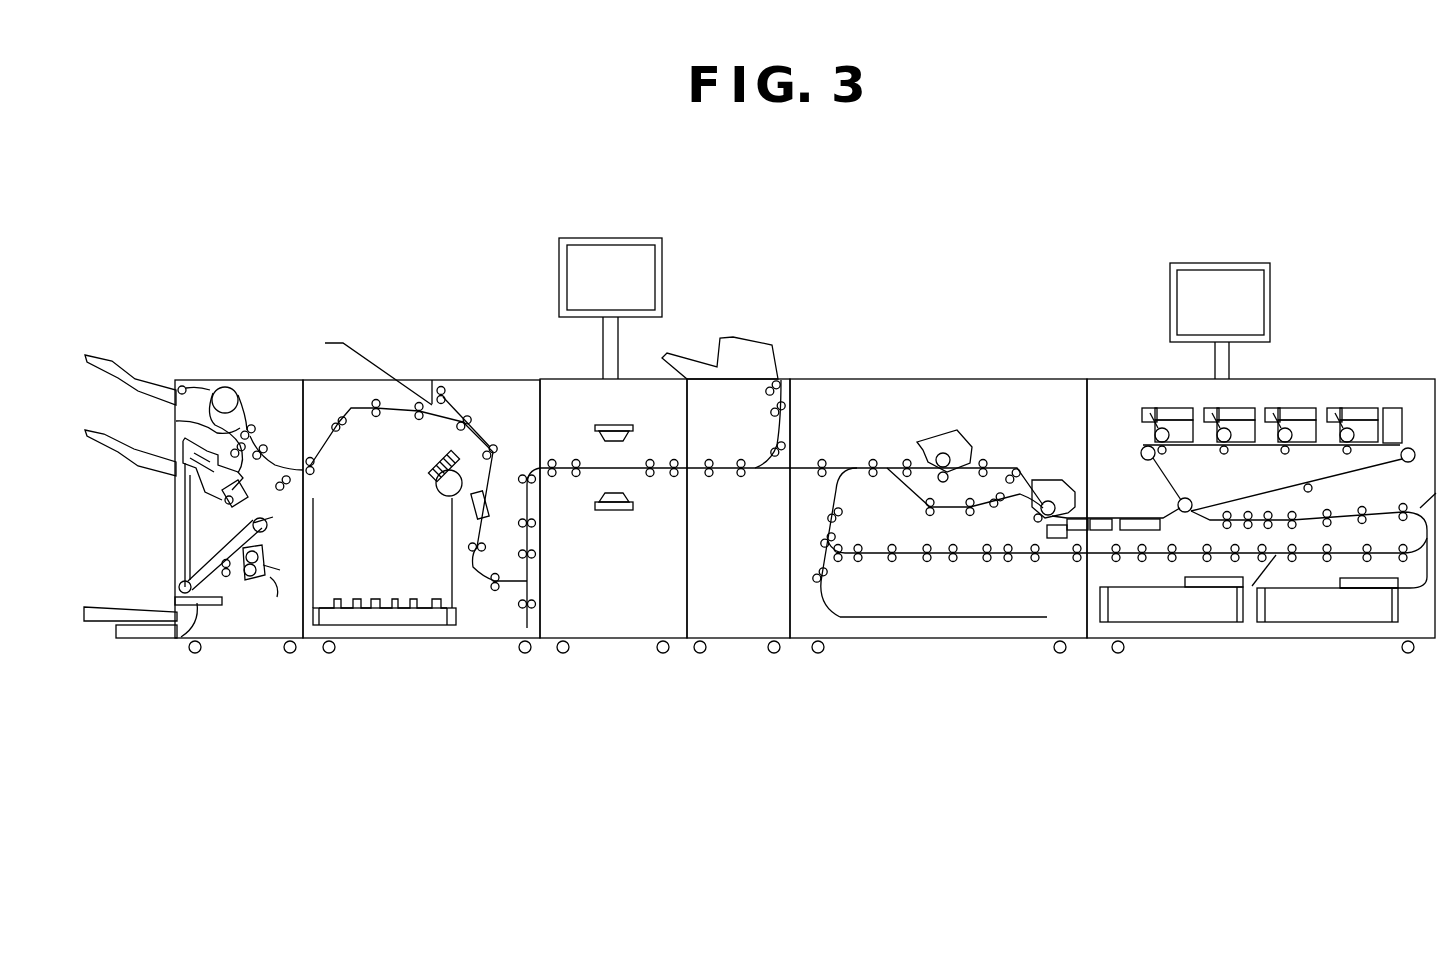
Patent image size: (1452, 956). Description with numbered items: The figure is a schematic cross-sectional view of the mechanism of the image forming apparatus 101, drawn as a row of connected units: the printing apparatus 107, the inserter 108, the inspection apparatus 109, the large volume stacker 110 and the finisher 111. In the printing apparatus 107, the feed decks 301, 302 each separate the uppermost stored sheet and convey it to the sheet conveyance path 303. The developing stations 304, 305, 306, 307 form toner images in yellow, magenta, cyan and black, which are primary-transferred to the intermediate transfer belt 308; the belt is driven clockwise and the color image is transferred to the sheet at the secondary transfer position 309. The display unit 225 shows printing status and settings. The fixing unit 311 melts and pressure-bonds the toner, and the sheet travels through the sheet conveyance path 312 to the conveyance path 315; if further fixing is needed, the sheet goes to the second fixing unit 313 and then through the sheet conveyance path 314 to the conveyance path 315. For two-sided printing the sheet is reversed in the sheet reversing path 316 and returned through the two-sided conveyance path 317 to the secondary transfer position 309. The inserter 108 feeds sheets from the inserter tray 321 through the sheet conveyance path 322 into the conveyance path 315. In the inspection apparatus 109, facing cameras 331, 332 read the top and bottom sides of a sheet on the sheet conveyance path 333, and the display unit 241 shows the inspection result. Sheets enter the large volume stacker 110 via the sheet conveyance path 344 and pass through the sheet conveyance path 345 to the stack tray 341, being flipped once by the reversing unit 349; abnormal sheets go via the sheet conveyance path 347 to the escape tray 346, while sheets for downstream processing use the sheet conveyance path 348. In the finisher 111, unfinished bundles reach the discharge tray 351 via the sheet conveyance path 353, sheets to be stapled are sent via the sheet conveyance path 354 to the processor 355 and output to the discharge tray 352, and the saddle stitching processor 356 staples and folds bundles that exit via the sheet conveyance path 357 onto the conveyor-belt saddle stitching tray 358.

The image forming apparatus 101 is at (1040, 213).
The printing apparatus 107 is at (943, 642).
The inserter 108 is at (740, 640).
The inspection apparatus 109 is at (613, 640).
The large volume stacker 110 is at (429, 645).
The finisher 111 is at (249, 645).
The display unit 225 is at (1220, 263).
The display unit 241 is at (615, 237).
The feed deck 301 is at (1205, 625).
The feed deck 302 is at (1358, 625).
The sheet conveyance path 303 is at (1400, 497).
The developing station 304 is at (1355, 407).
The developing station 305 is at (1300, 407).
The developing station 306 is at (1240, 407).
The developing station 307 is at (1168, 407).
The intermediate transfer belt 308 is at (1235, 503).
The secondary transfer position 309 is at (1170, 498).
The fixing unit 311 is at (1055, 480).
The sheet conveyance path 312 is at (900, 487).
The second fixing unit 313 is at (935, 432).
The sheet conveyance path 314 is at (893, 465).
The conveyance path 315 is at (822, 464).
The sheet reversing path 316 is at (887, 616).
The two-sided conveyance path 317 is at (1053, 560).
The inserter tray 321 is at (697, 338).
The sheet conveyance path 322 is at (767, 438).
The camera 331 is at (612, 424).
The camera 332 is at (619, 512).
The sheet conveyance path 333 is at (592, 464).
The stack tray 341 is at (371, 592).
The sheet conveyance path 344 is at (527, 624).
The sheet conveyance path 345 is at (466, 442).
The escape tray 346 is at (388, 373).
The sheet conveyance path 347 is at (458, 401).
The sheet conveyance path 348 is at (351, 403).
The reversing unit 349 is at (520, 645).
The discharge tray 351 is at (101, 354).
The discharge tray 352 is at (94, 427).
The sheet conveyance path 353 is at (205, 392).
The sheet conveyance path 354 is at (176, 421).
The processor 355 is at (222, 505).
The saddle stitching processor 356 is at (288, 477).
The sheet conveyance path 357 is at (183, 645).
The saddle stitching tray 358 is at (107, 607).